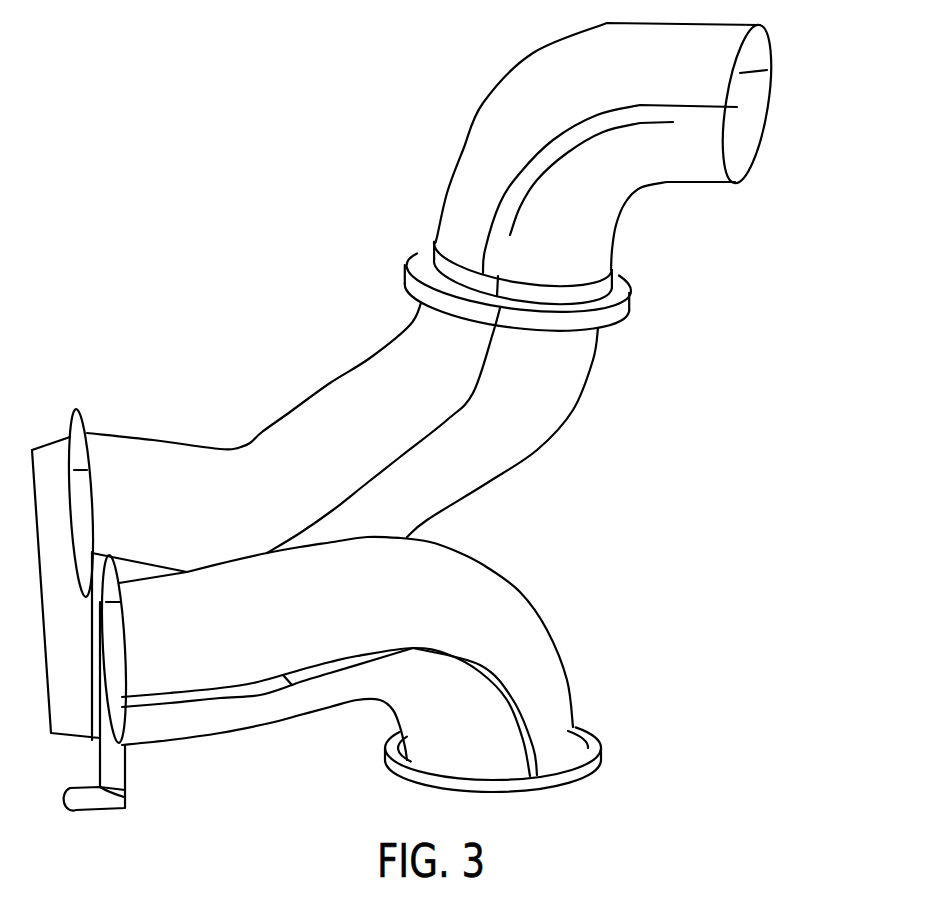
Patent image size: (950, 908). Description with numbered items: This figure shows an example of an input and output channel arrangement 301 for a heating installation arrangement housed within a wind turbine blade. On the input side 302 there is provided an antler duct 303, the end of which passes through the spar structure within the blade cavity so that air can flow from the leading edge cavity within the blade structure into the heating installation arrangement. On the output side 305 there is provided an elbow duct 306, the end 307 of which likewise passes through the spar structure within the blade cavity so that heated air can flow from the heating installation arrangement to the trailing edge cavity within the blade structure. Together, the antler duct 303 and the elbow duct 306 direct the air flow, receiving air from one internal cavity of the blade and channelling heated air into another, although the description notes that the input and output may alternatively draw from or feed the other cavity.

The input and output channel arrangement 301 is at (180, 93).
The input side 302 is at (112, 658).
The antler duct 303 is at (547, 628).
The output side 305 is at (80, 507).
The elbow duct 306 is at (587, 372).
The end of elbow duct 307 is at (755, 113).